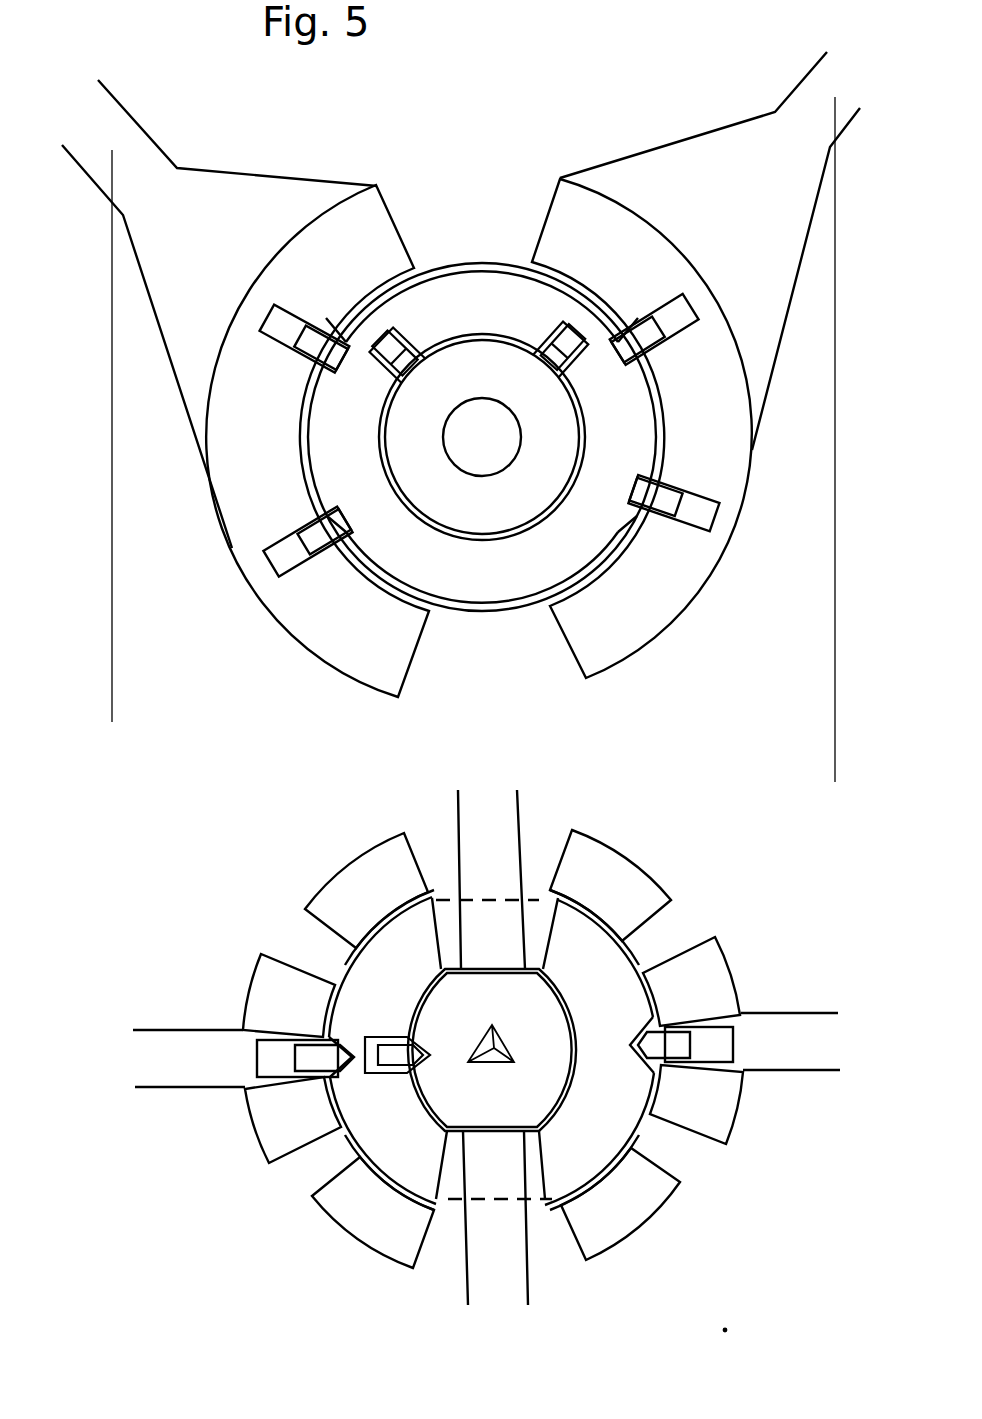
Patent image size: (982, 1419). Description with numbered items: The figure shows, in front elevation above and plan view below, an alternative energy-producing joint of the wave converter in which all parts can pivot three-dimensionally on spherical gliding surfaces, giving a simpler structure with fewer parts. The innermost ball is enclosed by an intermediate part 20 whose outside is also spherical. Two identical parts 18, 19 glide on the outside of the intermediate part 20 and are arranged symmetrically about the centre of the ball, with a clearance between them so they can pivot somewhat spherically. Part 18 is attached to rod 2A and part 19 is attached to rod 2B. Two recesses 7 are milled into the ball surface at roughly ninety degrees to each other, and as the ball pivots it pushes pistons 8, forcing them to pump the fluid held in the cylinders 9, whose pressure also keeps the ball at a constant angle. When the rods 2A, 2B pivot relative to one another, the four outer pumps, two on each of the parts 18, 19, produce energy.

The rod 2A is at (190, 1053).
The rod 2B is at (825, 1038).
The milled-down recess 7 is at (355, 337).
The piston 8 is at (307, 333).
The cylinder filled with fluid 9 is at (277, 317).
The part with internal spherical shape 18 is at (630, 1175).
The part symmetrically identical to part 18 19 is at (678, 585).
The intermediate part 20 is at (567, 947).